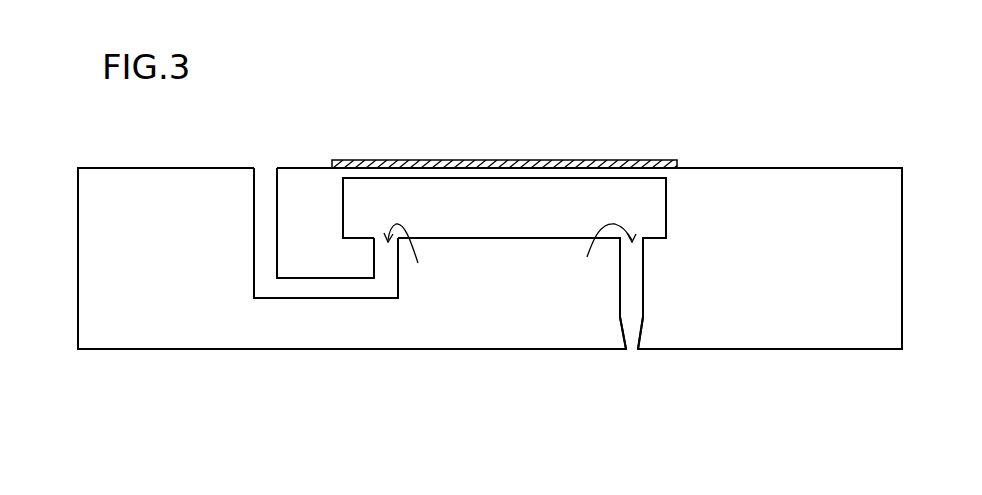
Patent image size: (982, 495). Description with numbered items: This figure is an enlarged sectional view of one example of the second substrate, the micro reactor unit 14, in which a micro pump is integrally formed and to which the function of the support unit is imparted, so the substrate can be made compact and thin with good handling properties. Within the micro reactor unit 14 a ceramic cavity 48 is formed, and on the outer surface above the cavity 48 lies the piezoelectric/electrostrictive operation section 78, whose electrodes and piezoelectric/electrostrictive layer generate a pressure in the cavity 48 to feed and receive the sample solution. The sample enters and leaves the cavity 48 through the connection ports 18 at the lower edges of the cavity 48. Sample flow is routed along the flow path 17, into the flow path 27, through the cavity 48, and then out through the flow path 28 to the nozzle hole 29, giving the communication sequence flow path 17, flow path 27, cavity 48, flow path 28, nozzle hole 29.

The micro reactor unit 14 is at (800, 178).
The flow path 17 is at (261, 237).
The connection ports 18 is at (510, 254).
The flow path 27 is at (390, 280).
The flow path 28 is at (635, 283).
The nozzle hole 29 is at (633, 330).
The cavity 48 is at (520, 220).
The piezoelectric/electrostrictive operation section 78 is at (522, 160).